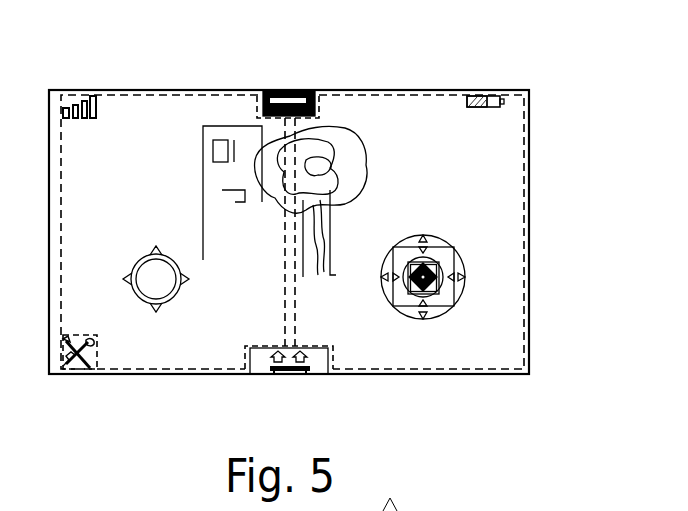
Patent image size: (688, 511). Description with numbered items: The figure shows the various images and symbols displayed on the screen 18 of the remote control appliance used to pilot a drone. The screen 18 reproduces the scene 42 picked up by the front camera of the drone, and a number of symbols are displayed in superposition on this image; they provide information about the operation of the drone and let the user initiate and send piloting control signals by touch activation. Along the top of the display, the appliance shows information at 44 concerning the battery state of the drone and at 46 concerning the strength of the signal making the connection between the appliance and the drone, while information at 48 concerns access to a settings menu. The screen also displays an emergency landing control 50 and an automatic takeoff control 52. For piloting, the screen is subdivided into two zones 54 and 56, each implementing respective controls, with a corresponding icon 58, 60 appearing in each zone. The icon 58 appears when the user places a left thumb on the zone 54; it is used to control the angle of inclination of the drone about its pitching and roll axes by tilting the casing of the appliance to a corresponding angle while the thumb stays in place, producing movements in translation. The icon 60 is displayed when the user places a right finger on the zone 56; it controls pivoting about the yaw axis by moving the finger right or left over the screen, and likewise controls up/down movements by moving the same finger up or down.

The screen 18 is at (512, 180).
The scene 42 is at (368, 129).
The battery state information 44 is at (495, 96).
The signal strength information 46 is at (84, 105).
The settings menu access 48 is at (76, 375).
The emergency landing control 50 is at (287, 90).
The automatic takeoff control 52 is at (258, 362).
The left zone 54 is at (157, 95).
The right zone 56 is at (408, 90).
The pitch and roll icon 58 is at (148, 243).
The yaw and up/down icon 60 is at (428, 228).